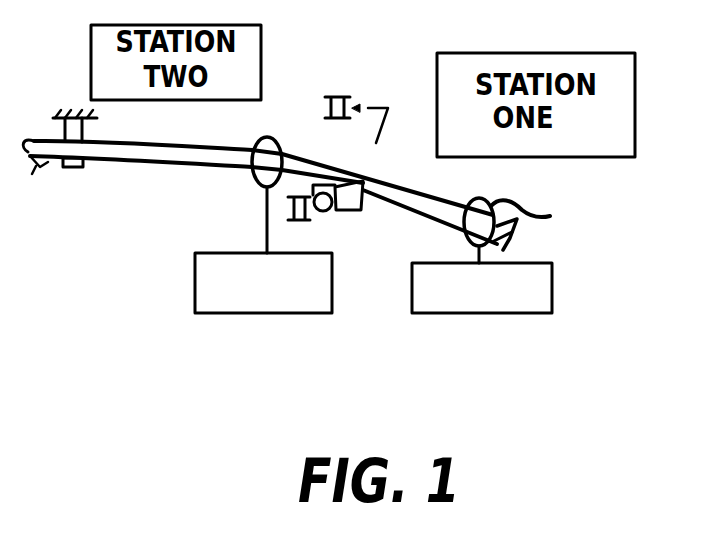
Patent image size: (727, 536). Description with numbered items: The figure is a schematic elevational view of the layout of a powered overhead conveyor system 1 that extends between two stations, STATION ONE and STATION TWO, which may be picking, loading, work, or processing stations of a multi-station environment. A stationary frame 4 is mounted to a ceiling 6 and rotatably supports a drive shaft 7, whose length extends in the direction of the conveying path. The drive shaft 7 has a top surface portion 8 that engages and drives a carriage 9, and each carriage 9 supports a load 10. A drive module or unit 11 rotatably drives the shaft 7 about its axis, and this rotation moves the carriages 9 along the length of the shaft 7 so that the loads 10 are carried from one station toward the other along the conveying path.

The powered overhead conveyor system 1 is at (325, 166).
The stationary frame 4 is at (68, 172).
The ceiling 6 is at (100, 117).
The drive shaft 7 is at (105, 158).
The top surface portion 8 is at (228, 148).
The carriage 9 is at (252, 172).
The load 10 is at (205, 282).
The drive module 11 is at (326, 205).